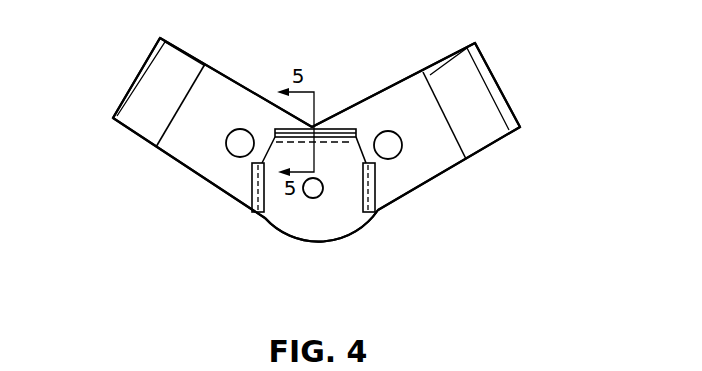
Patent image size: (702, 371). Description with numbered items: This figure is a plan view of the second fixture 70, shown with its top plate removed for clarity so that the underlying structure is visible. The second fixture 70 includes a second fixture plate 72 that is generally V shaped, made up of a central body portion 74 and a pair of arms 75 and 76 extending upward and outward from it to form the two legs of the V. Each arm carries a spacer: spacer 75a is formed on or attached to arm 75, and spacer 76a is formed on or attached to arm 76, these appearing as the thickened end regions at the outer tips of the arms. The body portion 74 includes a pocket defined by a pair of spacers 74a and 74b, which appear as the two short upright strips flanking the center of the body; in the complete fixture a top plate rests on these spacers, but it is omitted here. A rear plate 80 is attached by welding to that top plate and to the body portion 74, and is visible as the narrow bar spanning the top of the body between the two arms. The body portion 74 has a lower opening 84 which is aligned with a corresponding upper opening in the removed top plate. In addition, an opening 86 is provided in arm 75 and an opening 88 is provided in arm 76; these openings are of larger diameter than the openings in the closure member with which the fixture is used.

The second fixture 70 is at (481, 204).
The second fixture plate 72 is at (402, 184).
The body portion 74 is at (318, 222).
The spacer 74a is at (377, 213).
The spacer 74b is at (265, 217).
The arm 75 is at (425, 160).
The spacer 75a is at (490, 127).
The arm 76 is at (215, 168).
The spacer 76a is at (155, 118).
The rear plate 80 is at (337, 133).
The lower aligned opening 84 is at (307, 196).
The opening 86 is at (378, 132).
The opening 88 is at (242, 129).